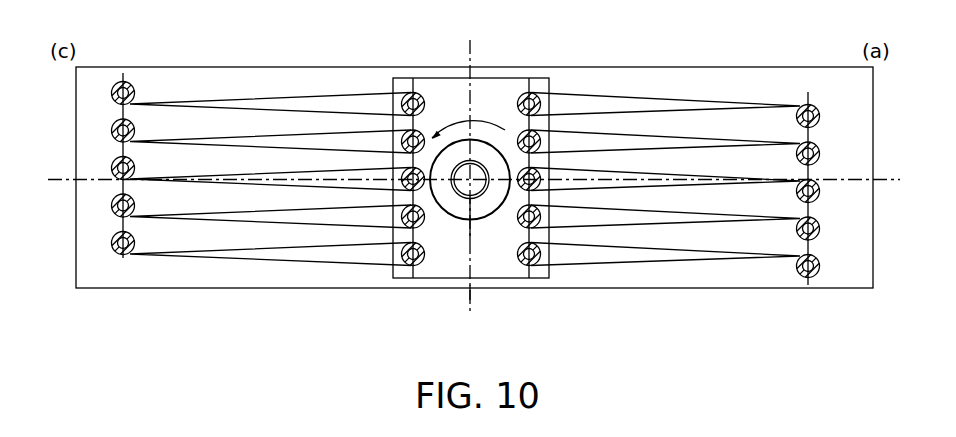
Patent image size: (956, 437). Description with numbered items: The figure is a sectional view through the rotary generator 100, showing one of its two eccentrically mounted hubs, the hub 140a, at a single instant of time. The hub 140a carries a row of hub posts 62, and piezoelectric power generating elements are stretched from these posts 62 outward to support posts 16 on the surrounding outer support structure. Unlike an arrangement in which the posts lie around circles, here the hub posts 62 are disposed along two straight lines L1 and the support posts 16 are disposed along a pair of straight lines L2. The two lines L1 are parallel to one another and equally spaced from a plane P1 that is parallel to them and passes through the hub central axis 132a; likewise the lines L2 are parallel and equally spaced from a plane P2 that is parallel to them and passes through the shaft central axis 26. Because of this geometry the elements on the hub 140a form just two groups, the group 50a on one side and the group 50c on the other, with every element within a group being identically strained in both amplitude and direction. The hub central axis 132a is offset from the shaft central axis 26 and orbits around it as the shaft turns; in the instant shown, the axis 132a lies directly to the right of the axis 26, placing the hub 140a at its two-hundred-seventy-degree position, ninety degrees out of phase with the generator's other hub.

The rotary generator 100 is at (150, 297).
The hub 140a is at (500, 85).
The posts 16 is at (114, 128).
The posts 62 is at (418, 132).
The group of elements 50c is at (238, 100).
The group of elements 50a is at (707, 100).
The central axis 26 is at (462, 195).
The central axis 132a is at (478, 172).
The plane P1 is at (474, 212).
The plane P2 is at (470, 298).
The straight lines L1 is at (412, 272).
The straight lines L2 is at (123, 257).